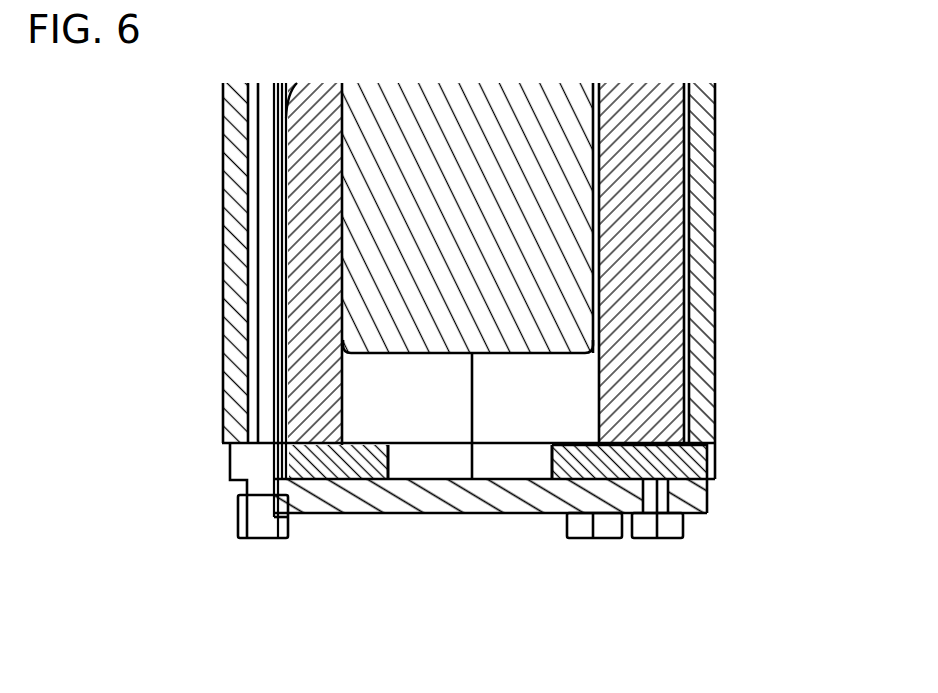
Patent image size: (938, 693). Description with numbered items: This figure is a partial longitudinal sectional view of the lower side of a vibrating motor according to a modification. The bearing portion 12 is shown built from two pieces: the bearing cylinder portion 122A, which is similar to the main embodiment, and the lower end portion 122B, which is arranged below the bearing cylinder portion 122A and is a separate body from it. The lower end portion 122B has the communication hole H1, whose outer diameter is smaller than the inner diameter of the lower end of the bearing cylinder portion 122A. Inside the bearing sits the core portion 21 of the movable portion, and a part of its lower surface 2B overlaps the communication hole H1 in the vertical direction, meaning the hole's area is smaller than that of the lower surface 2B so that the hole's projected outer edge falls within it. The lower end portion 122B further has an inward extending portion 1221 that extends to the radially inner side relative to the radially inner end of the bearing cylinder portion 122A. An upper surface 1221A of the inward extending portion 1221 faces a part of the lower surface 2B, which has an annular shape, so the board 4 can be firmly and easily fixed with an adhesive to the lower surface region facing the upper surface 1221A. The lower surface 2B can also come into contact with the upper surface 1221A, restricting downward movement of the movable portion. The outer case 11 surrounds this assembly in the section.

The outer case 11 is at (238, 180).
The bearing portion 12 is at (298, 277).
The core portion 21 is at (574, 250).
The lower surface 2B is at (420, 355).
The bearing cylinder portion 122A is at (668, 283).
The lower end portion 122B is at (564, 506).
The inward extending portion 1221 is at (699, 506).
The upper surface 1221A is at (580, 445).
The communication hole H1 is at (433, 468).
The board 4 is at (355, 513).